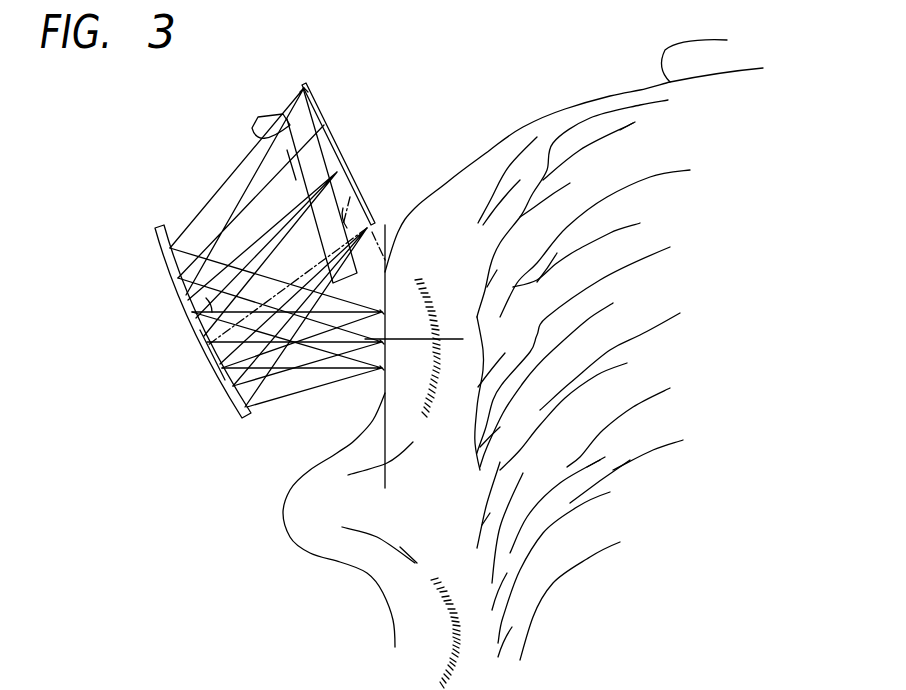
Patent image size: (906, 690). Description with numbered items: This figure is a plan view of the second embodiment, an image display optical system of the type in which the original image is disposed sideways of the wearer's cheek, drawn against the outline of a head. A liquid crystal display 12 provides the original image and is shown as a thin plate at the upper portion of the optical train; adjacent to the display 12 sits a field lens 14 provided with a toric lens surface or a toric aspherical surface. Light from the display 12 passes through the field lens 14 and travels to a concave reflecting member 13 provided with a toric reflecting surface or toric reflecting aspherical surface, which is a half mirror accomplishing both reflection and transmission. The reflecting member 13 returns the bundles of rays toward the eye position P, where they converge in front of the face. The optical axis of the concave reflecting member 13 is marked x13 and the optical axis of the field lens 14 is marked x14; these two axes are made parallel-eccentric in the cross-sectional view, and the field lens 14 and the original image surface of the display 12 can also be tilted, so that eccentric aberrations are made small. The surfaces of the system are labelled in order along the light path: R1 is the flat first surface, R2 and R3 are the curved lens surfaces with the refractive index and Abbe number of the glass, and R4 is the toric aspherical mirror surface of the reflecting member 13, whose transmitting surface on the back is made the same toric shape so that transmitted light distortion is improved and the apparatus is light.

The liquid crystal display 12 is at (315, 92).
The reflecting member 13 is at (157, 224).
The field lens 14 is at (302, 178).
The radius of curvature R1 is at (302, 90).
The radius of curvature R2 is at (268, 126).
The radius of curvature R3 is at (287, 183).
The radius of curvature R4 is at (203, 357).
The optical axis of the concave reflecting member x13 is at (190, 297).
The optical axis of the field lens x14 is at (350, 197).
The eye point P is at (386, 346).